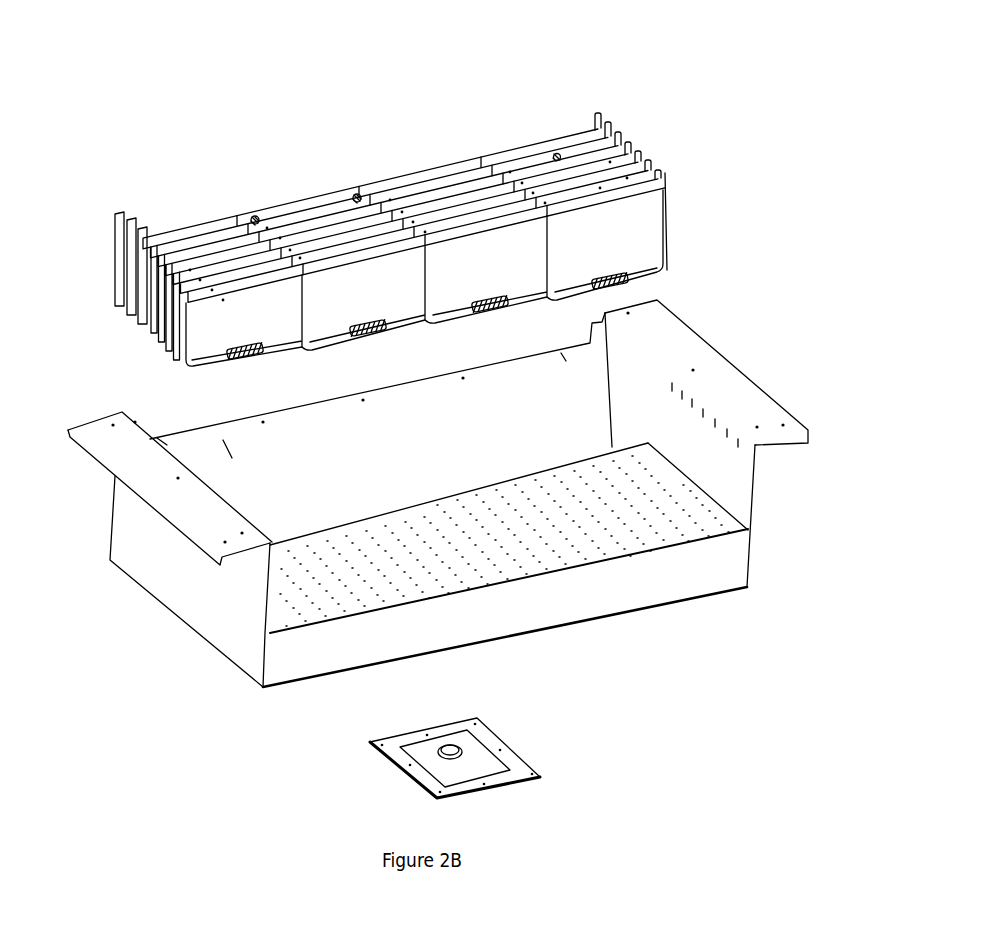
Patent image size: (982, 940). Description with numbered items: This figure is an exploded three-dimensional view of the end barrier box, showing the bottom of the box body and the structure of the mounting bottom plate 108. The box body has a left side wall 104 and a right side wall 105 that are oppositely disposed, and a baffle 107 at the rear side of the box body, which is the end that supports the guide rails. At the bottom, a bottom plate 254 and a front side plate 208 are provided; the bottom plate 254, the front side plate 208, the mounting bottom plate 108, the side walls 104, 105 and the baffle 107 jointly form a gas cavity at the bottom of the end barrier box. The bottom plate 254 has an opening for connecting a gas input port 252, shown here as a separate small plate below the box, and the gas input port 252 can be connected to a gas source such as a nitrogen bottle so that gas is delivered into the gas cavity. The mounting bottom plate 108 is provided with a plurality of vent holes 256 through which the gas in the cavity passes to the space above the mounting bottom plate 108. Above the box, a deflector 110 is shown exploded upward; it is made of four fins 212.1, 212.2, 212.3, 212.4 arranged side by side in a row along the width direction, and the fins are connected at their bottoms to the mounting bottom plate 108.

The deflector 110 is at (511, 23).
The fin 212.1 is at (225, 317).
The fin 212.2 is at (343, 290).
The fin 212.3 is at (455, 270).
The fin 212.4 is at (572, 250).
The side wall 105 is at (682, 420).
The baffle 107 is at (233, 457).
The side wall 104 is at (178, 560).
The mounting bottom plate 108 is at (718, 530).
The vent holes 256 is at (528, 567).
The front side plate 208 is at (448, 623).
The bottom plate 254 is at (272, 690).
The gas input port 252 is at (425, 747).